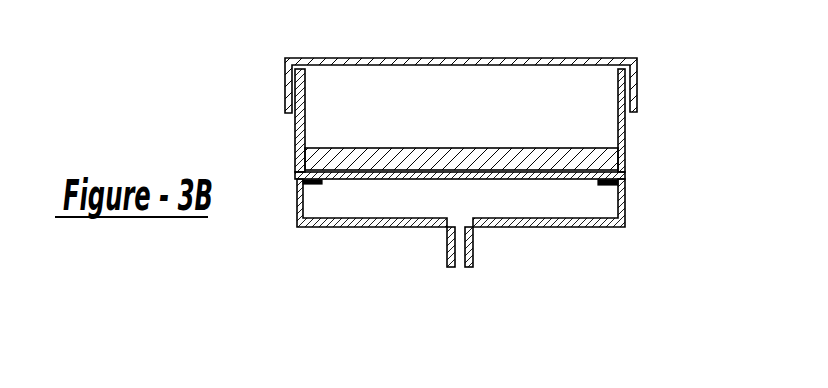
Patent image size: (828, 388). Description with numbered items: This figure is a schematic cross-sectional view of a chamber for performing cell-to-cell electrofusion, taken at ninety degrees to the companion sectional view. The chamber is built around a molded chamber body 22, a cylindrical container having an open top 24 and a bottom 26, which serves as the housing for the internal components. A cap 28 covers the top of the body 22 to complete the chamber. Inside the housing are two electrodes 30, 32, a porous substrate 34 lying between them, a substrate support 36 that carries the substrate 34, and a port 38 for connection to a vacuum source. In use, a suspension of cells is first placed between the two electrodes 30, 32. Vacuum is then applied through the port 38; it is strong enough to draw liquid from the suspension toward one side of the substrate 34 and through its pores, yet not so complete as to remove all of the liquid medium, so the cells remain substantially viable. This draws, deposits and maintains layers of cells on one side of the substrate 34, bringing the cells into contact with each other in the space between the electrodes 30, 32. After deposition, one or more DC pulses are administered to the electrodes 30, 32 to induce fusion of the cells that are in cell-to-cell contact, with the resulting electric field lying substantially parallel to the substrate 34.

The chamber body 22 is at (628, 128).
The open top 24 is at (590, 97).
The bottom 26 is at (596, 229).
The cap 28 is at (283, 96).
The electrode 30 is at (394, 137).
The electrode 32 is at (337, 153).
The porous substrate 34 is at (440, 182).
The substrate support 36 is at (320, 184).
The port 38 is at (474, 243).